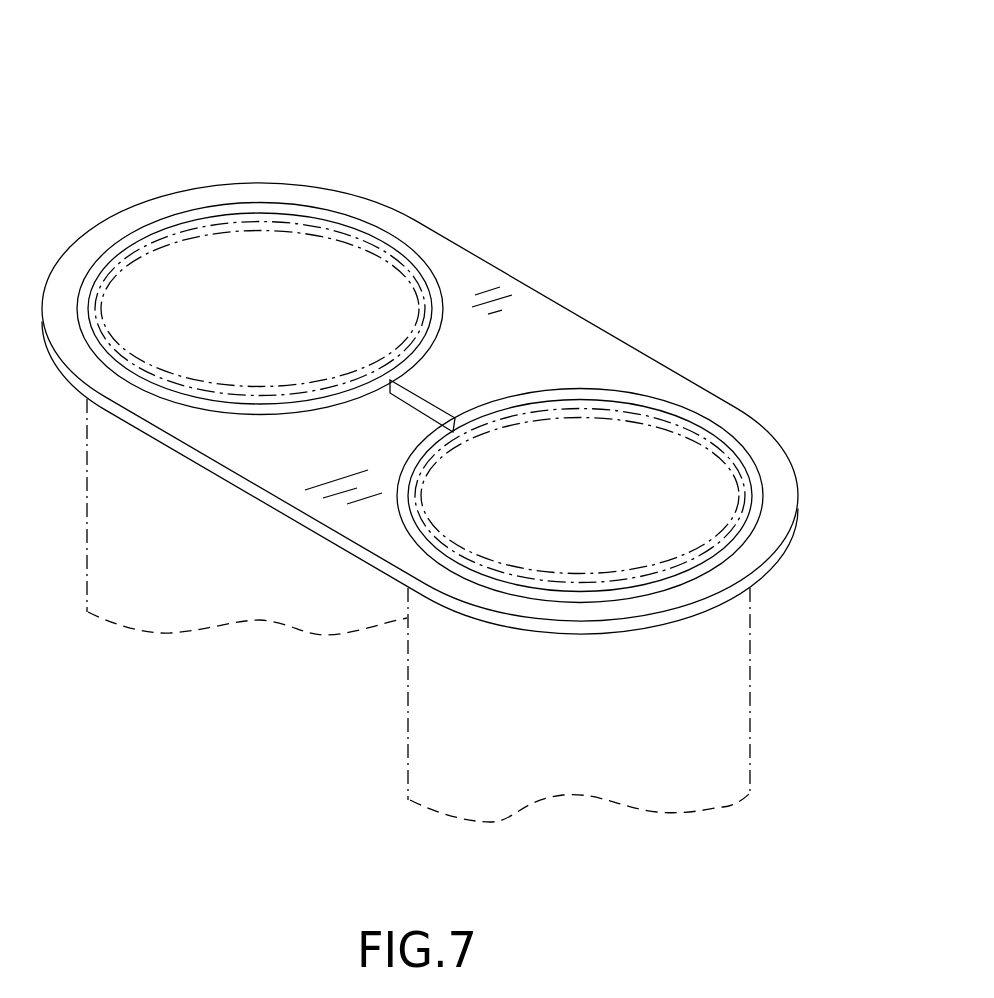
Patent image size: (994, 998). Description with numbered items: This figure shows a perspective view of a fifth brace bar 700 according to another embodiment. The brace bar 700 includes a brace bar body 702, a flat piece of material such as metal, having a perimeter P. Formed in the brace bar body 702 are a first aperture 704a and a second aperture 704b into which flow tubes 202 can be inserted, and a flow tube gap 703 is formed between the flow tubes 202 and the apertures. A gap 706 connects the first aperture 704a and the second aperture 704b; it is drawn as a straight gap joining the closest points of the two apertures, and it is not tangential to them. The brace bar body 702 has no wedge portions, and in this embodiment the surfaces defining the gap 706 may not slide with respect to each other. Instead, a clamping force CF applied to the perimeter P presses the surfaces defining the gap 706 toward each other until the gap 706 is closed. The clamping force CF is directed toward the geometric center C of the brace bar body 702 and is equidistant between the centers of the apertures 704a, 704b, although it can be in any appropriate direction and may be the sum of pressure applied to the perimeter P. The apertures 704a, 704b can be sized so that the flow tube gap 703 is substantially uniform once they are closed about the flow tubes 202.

The fifth brace bar 700 is at (599, 110).
The brace bar body 702 is at (242, 188).
The flow tubes 202 is at (356, 242).
The flow tube gap 703 is at (413, 270).
The first aperture 704a is at (160, 230).
The second aperture 704b is at (618, 602).
The gap 706 is at (393, 393).
The geometric center C is at (418, 400).
The clamping force CF is at (578, 276).
The perimeter P is at (452, 614).